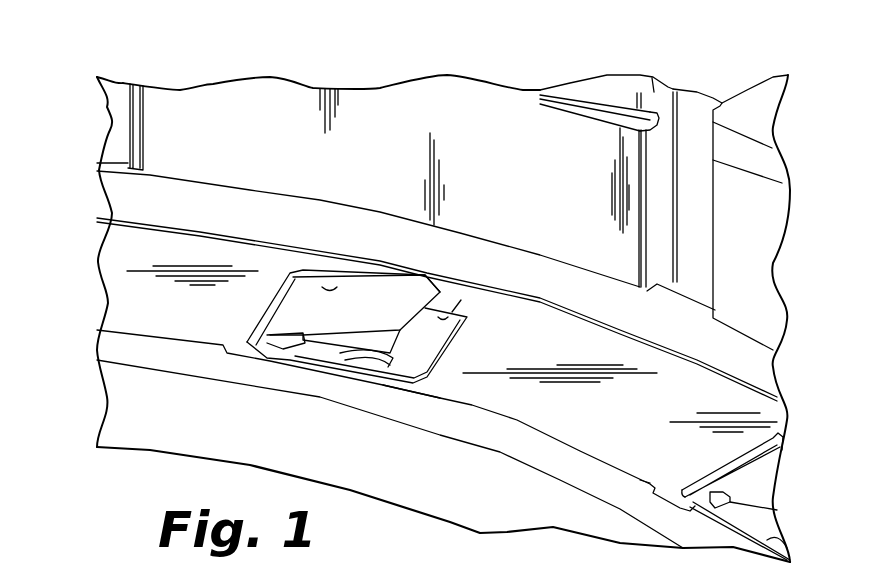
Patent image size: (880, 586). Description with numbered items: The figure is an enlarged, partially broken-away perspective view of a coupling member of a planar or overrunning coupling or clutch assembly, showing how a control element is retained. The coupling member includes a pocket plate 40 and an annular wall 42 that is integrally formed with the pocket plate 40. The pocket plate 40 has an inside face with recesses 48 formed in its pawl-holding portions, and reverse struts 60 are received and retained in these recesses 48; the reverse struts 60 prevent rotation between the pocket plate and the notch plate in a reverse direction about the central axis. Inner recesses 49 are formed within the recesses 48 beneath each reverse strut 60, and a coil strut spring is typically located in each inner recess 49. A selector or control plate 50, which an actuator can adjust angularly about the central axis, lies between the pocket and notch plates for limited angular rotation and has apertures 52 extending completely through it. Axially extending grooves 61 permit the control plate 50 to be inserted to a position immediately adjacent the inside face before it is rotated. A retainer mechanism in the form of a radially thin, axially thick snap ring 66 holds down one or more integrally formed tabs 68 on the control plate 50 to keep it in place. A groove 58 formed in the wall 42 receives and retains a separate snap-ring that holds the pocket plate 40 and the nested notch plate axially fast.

The pocket plate 40 is at (104, 398).
The annular wall 42 is at (273, 70).
The recesses 48 is at (427, 350).
The inner recesses 49 is at (373, 360).
The control plate 50 is at (466, 408).
The apertures 52 is at (452, 312).
The groove 58 is at (647, 113).
The reverse struts 60 is at (370, 272).
The axially extending grooves 61 is at (697, 193).
The snap ring 66 is at (317, 197).
The tabs 68 is at (508, 296).